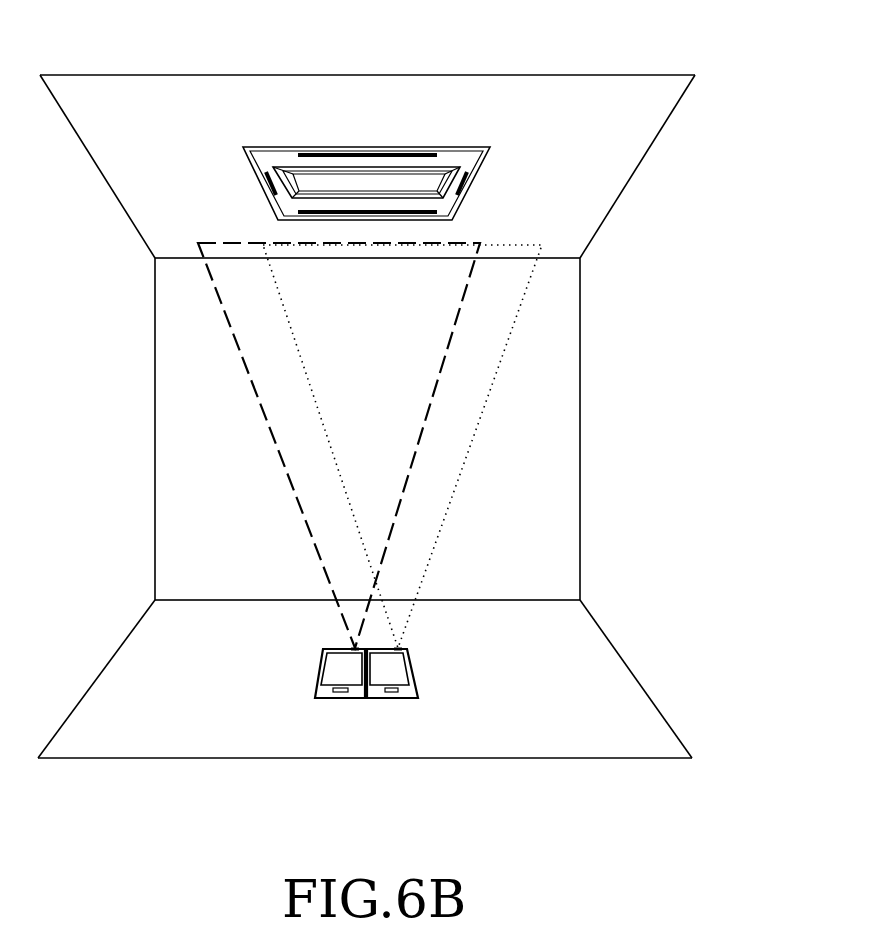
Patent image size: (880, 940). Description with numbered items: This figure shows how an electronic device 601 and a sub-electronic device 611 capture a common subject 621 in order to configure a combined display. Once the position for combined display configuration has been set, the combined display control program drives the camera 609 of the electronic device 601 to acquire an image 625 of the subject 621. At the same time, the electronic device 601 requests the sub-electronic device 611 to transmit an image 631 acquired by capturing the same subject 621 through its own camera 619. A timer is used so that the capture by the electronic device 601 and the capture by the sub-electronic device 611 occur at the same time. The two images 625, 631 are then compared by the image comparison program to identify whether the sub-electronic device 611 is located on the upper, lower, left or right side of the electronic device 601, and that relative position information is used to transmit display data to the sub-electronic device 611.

The electronic device 601 is at (318, 673).
The camera 609 is at (355, 649).
The sub-electronic device 611 is at (413, 671).
The camera 619 is at (397, 649).
The subject 621 is at (372, 147).
The image 625 is at (253, 393).
The image 631 is at (478, 350).